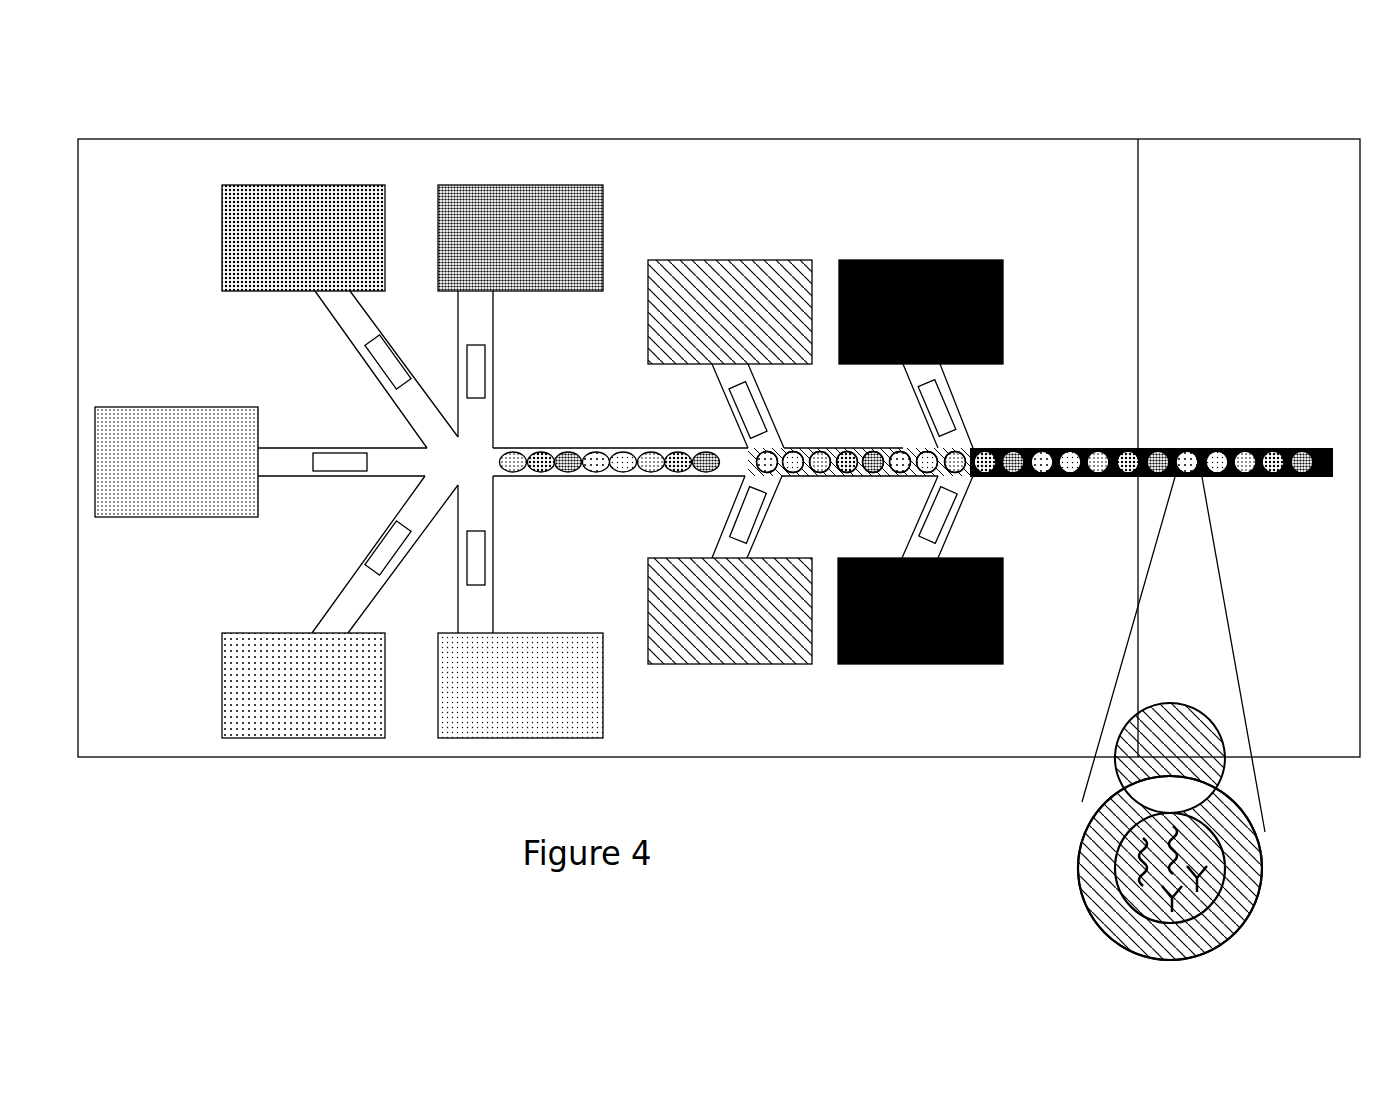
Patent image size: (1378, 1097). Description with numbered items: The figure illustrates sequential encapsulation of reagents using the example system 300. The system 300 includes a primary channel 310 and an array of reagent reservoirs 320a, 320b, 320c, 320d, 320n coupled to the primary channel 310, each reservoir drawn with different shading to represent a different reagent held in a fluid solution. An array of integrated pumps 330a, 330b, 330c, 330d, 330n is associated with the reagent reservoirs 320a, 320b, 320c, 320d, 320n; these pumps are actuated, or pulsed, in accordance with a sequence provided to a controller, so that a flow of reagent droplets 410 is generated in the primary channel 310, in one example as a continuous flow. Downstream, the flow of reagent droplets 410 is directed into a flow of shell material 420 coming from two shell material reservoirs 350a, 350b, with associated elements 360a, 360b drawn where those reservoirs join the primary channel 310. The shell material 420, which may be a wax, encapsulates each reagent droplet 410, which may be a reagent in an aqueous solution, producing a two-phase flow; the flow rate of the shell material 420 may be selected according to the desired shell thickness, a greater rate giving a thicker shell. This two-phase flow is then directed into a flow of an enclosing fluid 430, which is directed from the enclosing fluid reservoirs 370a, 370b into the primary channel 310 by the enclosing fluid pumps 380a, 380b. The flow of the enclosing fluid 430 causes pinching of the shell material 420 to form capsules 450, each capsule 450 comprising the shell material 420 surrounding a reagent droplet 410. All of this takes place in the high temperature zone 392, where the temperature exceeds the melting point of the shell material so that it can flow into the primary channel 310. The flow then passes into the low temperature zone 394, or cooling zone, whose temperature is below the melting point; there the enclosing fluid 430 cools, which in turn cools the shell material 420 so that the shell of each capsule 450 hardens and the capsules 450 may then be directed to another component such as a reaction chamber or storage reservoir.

The example system 300 is at (442, 118).
The primary channel 310 is at (575, 477).
The reagent reservoir 320a is at (610, 200).
The reagent reservoir 320b is at (222, 230).
The reagent reservoir 320c is at (172, 417).
The reagent reservoir 320d is at (222, 670).
The reagent reservoir 320n is at (603, 670).
The integrated pump 330a is at (485, 368).
The integrated pump 330b is at (370, 353).
The integrated pump 330c is at (352, 450).
The integrated pump 330d is at (372, 560).
The integrated pump 330n is at (482, 552).
The shell material reservoir 350a is at (748, 273).
The shell material reservoir 350b is at (760, 665).
The valve 360a is at (737, 407).
The valve 360b is at (765, 522).
The enclosing fluid reservoir 370a is at (948, 260).
The enclosing fluid reservoir 370b is at (922, 665).
The enclosing fluid pump 380a is at (947, 395).
The enclosing fluid pump 380b is at (947, 527).
The high temperature zone 392 is at (932, 175).
The low temperature zone 394 is at (1208, 193).
The reagent droplet 410 is at (607, 447).
The shell material 420 is at (858, 452).
The enclosing fluid 430 is at (1088, 448).
The capsule 450 is at (1222, 443).